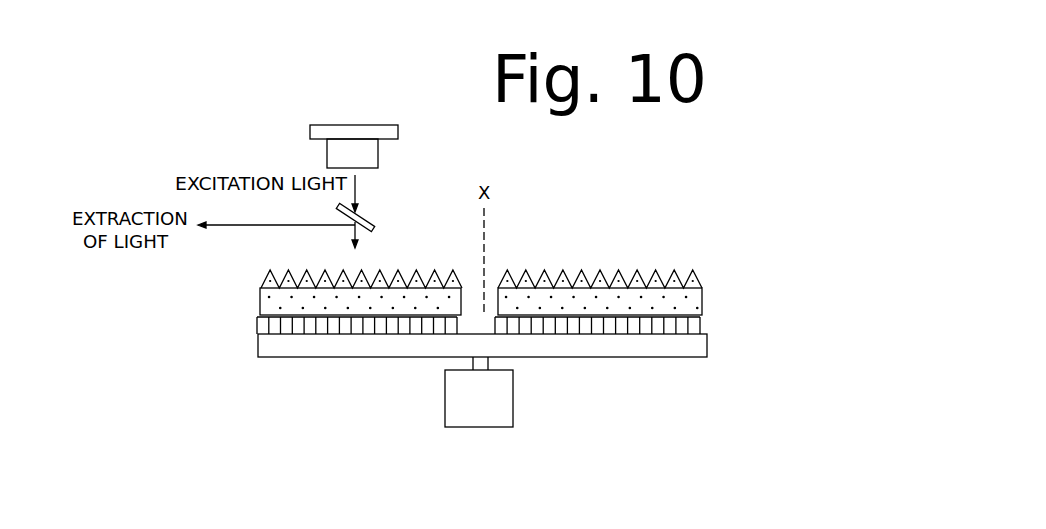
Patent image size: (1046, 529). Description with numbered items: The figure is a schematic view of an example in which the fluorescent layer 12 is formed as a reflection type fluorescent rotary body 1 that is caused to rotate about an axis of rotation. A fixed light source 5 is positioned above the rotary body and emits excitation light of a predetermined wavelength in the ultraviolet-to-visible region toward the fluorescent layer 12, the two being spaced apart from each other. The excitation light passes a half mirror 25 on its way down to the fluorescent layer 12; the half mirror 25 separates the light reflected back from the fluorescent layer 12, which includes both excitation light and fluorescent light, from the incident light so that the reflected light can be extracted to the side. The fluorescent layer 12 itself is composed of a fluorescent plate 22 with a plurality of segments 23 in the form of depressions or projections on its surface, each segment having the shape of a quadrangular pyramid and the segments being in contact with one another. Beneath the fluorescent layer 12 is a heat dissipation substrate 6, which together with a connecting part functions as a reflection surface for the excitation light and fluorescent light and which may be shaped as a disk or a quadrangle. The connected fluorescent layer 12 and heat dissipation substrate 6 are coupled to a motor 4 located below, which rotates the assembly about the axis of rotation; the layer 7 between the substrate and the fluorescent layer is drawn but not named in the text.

The reflection type fluorescent rotary body 1 is at (534, 292).
The motor 4 is at (490, 420).
The fixed light source 5 is at (333, 148).
The heat dissipation substrate 6 is at (705, 352).
The reflective/electrode layer 7 is at (697, 323).
The fluorescent layer 12 is at (536, 292).
The fluorescent plate 22 is at (695, 298).
The segments 23 is at (692, 278).
The half mirror 25 is at (367, 218).